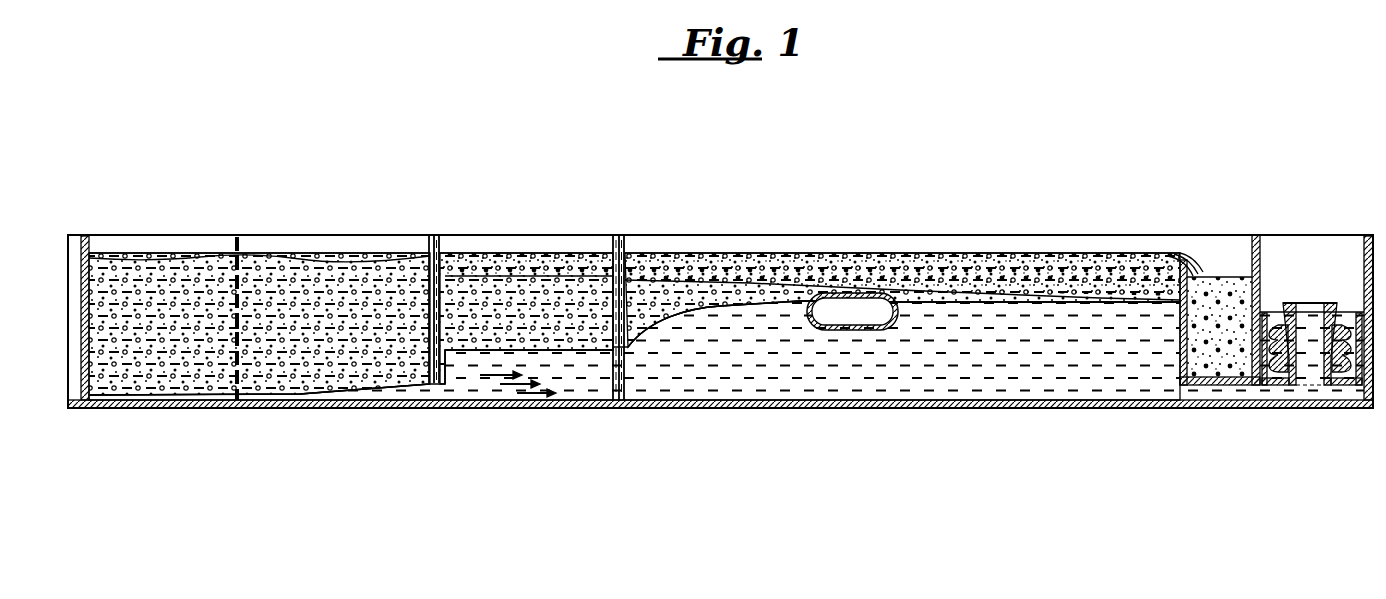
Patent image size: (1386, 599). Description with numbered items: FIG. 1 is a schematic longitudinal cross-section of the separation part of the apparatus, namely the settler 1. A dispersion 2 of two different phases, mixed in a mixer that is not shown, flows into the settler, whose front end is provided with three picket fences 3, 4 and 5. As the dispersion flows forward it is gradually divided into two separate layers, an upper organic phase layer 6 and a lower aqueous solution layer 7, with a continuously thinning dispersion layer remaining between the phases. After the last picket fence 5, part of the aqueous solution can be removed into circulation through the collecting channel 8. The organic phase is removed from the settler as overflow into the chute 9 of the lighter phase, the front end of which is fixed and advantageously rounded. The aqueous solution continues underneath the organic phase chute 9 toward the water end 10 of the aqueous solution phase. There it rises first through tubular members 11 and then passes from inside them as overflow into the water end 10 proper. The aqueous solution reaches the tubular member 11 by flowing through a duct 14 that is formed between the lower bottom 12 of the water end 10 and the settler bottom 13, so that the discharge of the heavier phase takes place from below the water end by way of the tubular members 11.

The settler 1 is at (355, 210).
The dispersion 2 is at (161, 385).
The picket fence 3 is at (234, 273).
The picket fence 4 is at (440, 254).
The picket fence 5 is at (628, 252).
The organic phase layer 6 is at (727, 258).
The aqueous solution layer 7 is at (688, 384).
The collecting channel 8 is at (853, 300).
The chute of the lighter phase 9 is at (1224, 262).
The water end 10 is at (1347, 262).
The tubular member 11 is at (1291, 288).
The lower bottom of the water end 12 is at (1275, 386).
The settler bottom 13 is at (1357, 410).
The duct 14 is at (1312, 388).